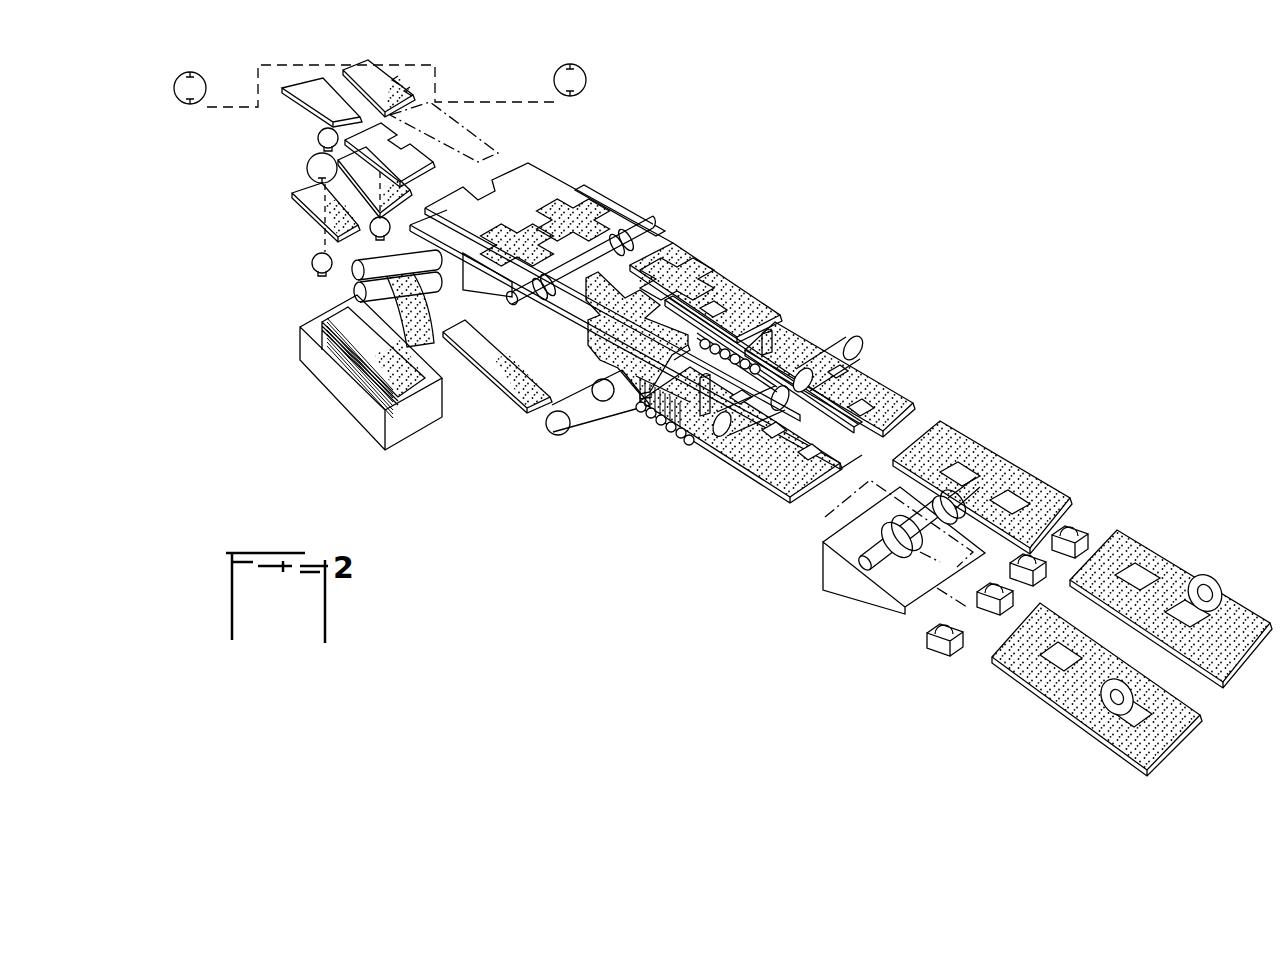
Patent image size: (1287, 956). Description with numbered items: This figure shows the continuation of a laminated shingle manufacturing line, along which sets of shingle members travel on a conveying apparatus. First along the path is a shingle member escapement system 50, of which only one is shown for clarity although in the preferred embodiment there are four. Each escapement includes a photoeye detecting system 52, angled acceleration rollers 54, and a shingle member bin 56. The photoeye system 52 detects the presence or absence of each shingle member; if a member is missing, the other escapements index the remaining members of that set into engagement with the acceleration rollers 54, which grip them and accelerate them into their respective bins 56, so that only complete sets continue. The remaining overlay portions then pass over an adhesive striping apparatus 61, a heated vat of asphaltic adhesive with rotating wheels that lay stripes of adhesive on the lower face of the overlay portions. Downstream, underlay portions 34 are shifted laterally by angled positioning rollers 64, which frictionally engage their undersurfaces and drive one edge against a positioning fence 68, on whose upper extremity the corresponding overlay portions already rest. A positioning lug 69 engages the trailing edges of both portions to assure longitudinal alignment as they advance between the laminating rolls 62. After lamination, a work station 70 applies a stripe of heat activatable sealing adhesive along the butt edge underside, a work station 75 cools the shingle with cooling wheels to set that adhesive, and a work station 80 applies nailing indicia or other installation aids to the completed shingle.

The underlay portions 34 is at (458, 128).
The shingle member escapement system 50 is at (258, 208).
The photoeye detecting system 52 is at (174, 93).
The angled acceleration rollers 54 is at (352, 284).
The shingle member bin 56 is at (341, 386).
The adhesive striping apparatus 61 is at (667, 225).
The laminating rolls 62 is at (862, 345).
The angled positioning rollers 64 is at (723, 353).
The positioning fence 68 is at (686, 314).
The positioning lug 69 is at (787, 333).
The work station 70 is at (805, 555).
The work station 75 is at (962, 681).
The work station 80 is at (1132, 783).